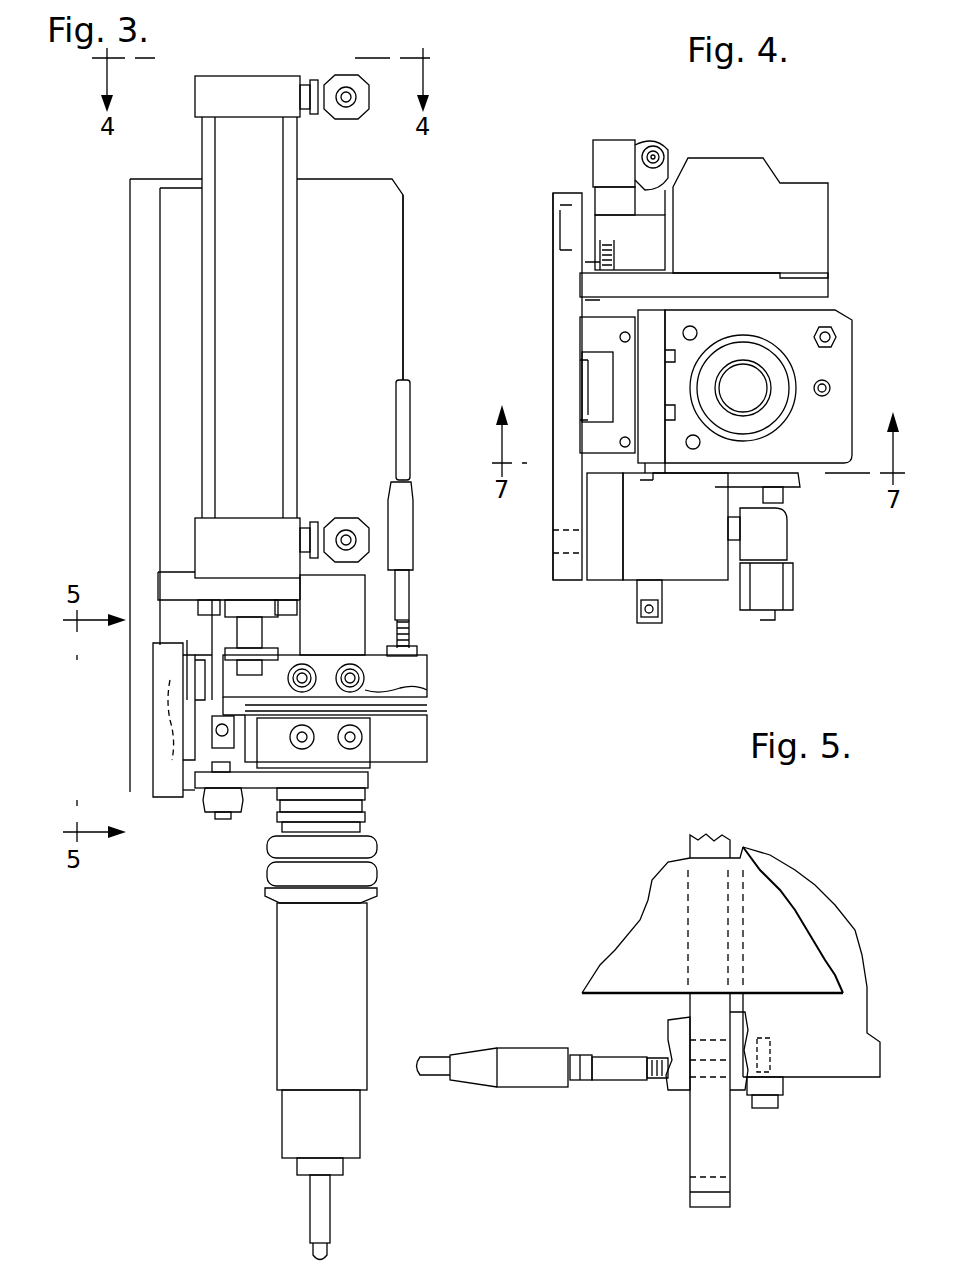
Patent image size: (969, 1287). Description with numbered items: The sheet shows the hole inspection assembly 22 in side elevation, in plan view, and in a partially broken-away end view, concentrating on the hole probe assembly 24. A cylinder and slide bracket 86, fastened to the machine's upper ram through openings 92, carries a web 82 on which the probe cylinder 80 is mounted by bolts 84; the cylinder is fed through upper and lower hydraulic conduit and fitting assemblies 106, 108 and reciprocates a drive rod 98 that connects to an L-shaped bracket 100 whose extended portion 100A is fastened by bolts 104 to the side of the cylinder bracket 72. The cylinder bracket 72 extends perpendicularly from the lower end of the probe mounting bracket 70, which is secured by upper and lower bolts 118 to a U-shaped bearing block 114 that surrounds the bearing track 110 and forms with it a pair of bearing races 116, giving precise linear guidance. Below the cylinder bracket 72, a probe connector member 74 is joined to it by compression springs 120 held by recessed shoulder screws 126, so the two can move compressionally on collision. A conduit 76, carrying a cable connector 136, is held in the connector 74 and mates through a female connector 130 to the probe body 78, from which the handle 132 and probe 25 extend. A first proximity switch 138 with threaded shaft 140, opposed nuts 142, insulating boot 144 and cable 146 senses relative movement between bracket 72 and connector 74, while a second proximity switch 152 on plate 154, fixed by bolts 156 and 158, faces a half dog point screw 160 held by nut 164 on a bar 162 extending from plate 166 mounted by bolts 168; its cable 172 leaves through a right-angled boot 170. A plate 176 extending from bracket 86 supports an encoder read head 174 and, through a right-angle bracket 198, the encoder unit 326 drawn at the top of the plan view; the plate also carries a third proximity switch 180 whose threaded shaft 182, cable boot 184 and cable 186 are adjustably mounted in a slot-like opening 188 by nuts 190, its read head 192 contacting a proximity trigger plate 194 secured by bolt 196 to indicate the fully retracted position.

In FIG. 3, the hole inspection assembly 22 is at (432, 218).
In FIG. 4, the hole inspection assembly 22 is at (812, 158).
In FIG. 3, the hole probe assembly 24 is at (436, 735).
In FIG. 3, the probe 25 is at (300, 1197).
In FIG. 4, the probe mounting bracket 70 is at (650, 465).
In FIG. 3, the cylinder bracket 72 is at (430, 670).
In FIG. 4, the cylinder bracket 72 is at (845, 355).
In FIG. 5, the cylinder bracket 72 is at (862, 1048).
In FIG. 3, the probe connector member 74 is at (412, 766).
In FIG. 3, the conduit 76 is at (352, 605).
In FIG. 4, the conduit 76 is at (762, 438).
In FIG. 3, the probe body 78 is at (285, 958).
In FIG. 3, the probe cylinder 80 is at (268, 262).
In FIG. 4, the probe cylinder 80 is at (690, 575).
In FIG. 3, the web 82 is at (175, 575).
In FIG. 4, the web 82 is at (598, 572).
In FIG. 3, the bolts 84 is at (282, 578).
In FIG. 3, the cylinder and slide bracket 86 is at (138, 352).
In FIG. 4, the cylinder and slide bracket 86 is at (560, 515).
In FIG. 5, the cylinder and slide bracket 86 is at (650, 915).
In FIG. 4, the openings 92 is at (553, 228).
In FIG. 3, the drive rod 98 is at (285, 630).
In FIG. 3, the L-shaped bracket 100 is at (215, 624).
In FIG. 3, the extended portion 100A is at (427, 690).
In FIG. 4, the extended portion 100A is at (795, 480).
In FIG. 3, the bolts 104 is at (320, 672).
In FIG. 4, the bolts 104 is at (730, 492).
In FIG. 3, the upper hydraulic conduit and fitting assembly 106 is at (262, 90).
In FIG. 4, the upper hydraulic conduit and fitting assembly 106 is at (775, 545).
In FIG. 3, the lower hydraulic conduit and fitting assembly 108 is at (312, 520).
In FIG. 4, the bearing track 110 is at (580, 365).
In FIG. 3, the bearing block 114 is at (168, 318).
In FIG. 4, the bearing block 114 is at (585, 335).
In FIG. 4, the bearing races 116 is at (597, 387).
In FIG. 4, the bolts 118 is at (656, 386).
In FIG. 3, the compression springs 120 is at (427, 708).
In FIG. 4, the shoulder screw 126 is at (696, 333).
In FIG. 3, the female connector 130 is at (370, 785).
In FIG. 3, the handle 132 is at (290, 1117).
In FIG. 4, the cable connector 136 is at (766, 290).
In FIG. 3, the first proximity switch 138 is at (412, 580).
In FIG. 3, the threaded shaft 140 is at (410, 628).
In FIG. 3, the nuts 142 is at (416, 648).
In FIG. 4, the nuts 142 is at (838, 330).
In FIG. 3, the insulating boot 144 is at (405, 536).
In FIG. 3, the power and data transmission cable 146 is at (395, 415).
In FIG. 4, the power and data transmission cable 146 is at (812, 350).
In FIG. 3, the second proximity switch 152 is at (286, 743).
In FIG. 3, the plate 154 is at (200, 708).
In FIG. 3, the bolts 156 is at (205, 728).
In FIG. 3, the bolts 158 is at (180, 688).
In FIG. 3, the half dog point screw 160 is at (195, 792).
In FIG. 3, the bar 162 is at (230, 810).
In FIG. 3, the nut 164 is at (207, 800).
In FIG. 3, the plate 166 is at (368, 749).
In FIG. 3, the bolts 168 is at (337, 743).
In FIG. 4, the right-angled boot 170 is at (637, 590).
In FIG. 4, the transmission cable 172 is at (648, 625).
In FIG. 4, the encoder read head 174 is at (828, 206).
In FIG. 3, the plate 176 is at (398, 308).
In FIG. 4, the plate 176 is at (828, 285).
In FIG. 5, the plate 176 is at (705, 1207).
In FIG. 5, the third proximity switch 180 is at (585, 1080).
In FIG. 4, the threaded shaft 182 is at (619, 245).
In FIG. 5, the threaded shaft 182 is at (660, 1080).
In FIG. 5, the cable boot 184 is at (470, 1060).
In FIG. 5, the transmission cable 186 is at (435, 1055).
In FIG. 3, the slot-like opening 188 is at (170, 745).
In FIG. 5, the slot-like opening 188 is at (710, 1178).
In FIG. 4, the nuts 190 is at (585, 300).
In FIG. 5, the nuts 190 is at (707, 1045).
In FIG. 5, the read head 192 is at (745, 1068).
In FIG. 5, the proximity trigger plate 194 is at (790, 1085).
In FIG. 5, the bolt 196 is at (768, 1108).
In FIG. 4, the right-angle bracket 198 is at (655, 248).
In FIG. 4, the sensor 326 is at (617, 140).